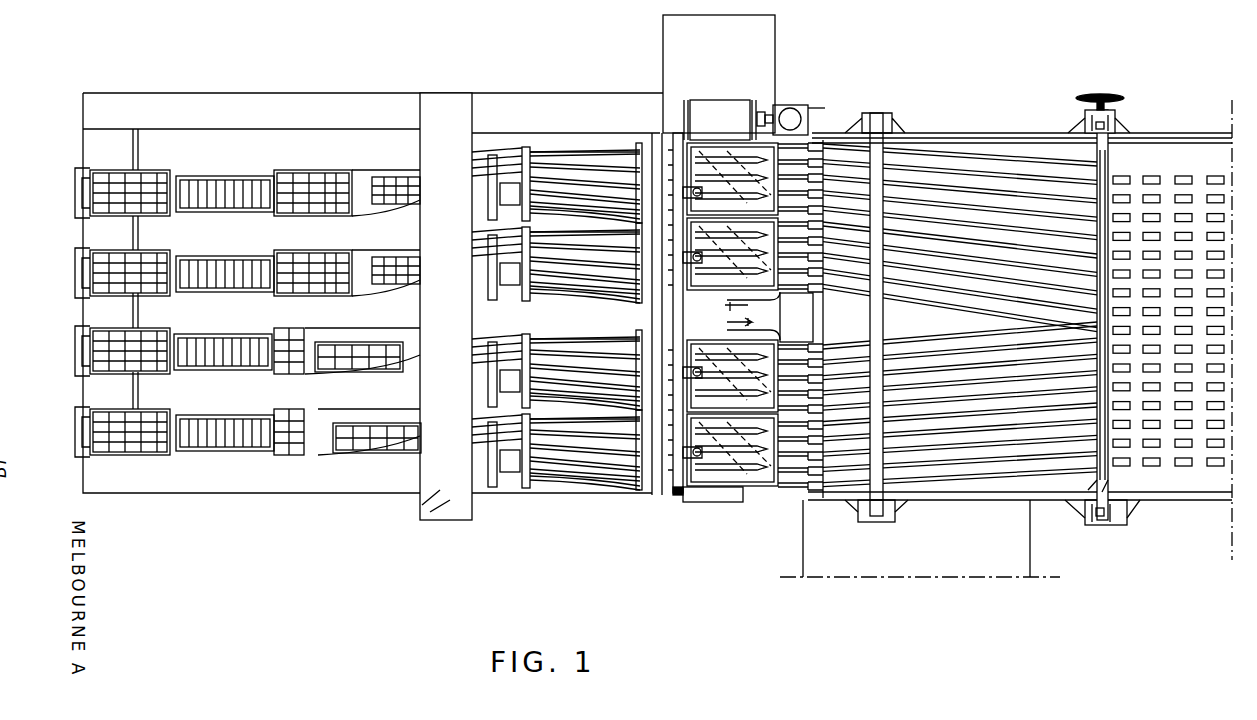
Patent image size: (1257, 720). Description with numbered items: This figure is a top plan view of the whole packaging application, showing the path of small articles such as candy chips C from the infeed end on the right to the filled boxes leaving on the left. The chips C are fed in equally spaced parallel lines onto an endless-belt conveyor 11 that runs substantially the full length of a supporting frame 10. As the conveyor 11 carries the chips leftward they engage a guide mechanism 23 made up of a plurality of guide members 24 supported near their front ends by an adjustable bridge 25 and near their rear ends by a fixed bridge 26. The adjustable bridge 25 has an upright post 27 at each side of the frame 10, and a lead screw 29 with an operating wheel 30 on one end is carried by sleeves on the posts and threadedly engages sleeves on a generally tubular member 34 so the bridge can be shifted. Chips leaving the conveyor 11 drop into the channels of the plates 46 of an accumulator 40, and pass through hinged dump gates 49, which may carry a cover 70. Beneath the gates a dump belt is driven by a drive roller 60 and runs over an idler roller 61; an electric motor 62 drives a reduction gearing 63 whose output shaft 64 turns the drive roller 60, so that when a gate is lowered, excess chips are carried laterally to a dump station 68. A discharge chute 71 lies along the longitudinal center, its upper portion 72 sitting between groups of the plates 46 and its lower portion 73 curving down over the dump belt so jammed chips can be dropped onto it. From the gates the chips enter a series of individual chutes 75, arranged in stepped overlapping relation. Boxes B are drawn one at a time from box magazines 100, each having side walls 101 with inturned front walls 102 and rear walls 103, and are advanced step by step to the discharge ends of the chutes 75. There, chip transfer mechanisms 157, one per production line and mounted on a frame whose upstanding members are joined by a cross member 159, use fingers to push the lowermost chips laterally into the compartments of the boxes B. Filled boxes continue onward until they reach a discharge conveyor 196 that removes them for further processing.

The supporting frame 10 is at (982, 128).
The conveyor 11 is at (1035, 143).
The guide mechanism 23 is at (1012, 500).
The guide members 24 is at (942, 290).
The adjustable bridge 25 is at (1129, 152).
The fixed bridge 26 is at (891, 108).
The upright post 27 is at (1112, 122).
The lead screw 29 is at (1106, 486).
The operating wheel 30 is at (1096, 94).
The tubular member 34 is at (1092, 490).
The accumulator 40 is at (643, 499).
The plates 46 is at (792, 498).
The dump gate 49 is at (714, 500).
The drive roller 60 is at (688, 100).
The idler roller 61 is at (678, 498).
The electric motor 62 is at (795, 108).
The reduction gearing 63 is at (826, 98).
The output shaft 64 is at (765, 110).
The dump station 68 is at (676, 33).
The cover 70 is at (738, 480).
The discharge chute 71 is at (726, 325).
The upper portion 72 is at (806, 318).
The lower portion 73 is at (726, 305).
The chutes 75 is at (582, 150).
The box magazines 100 is at (72, 244).
The side walls 101 is at (85, 175).
The front walls 102 is at (228, 210).
The rear walls 103 is at (76, 266).
The chip transfer mechanisms 157 is at (491, 144).
The cross member 159 is at (432, 492).
The discharge conveyor 196 is at (863, 560).
The boxes B is at (330, 200).
The candy chips C is at (1222, 308).